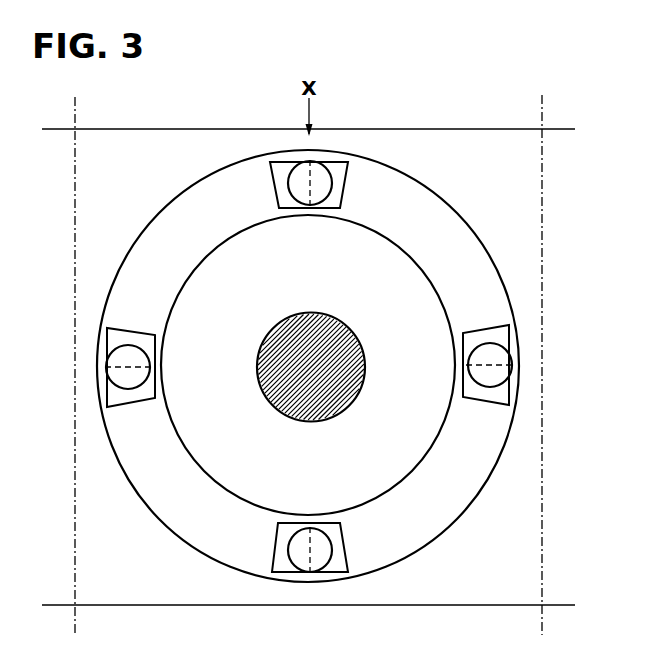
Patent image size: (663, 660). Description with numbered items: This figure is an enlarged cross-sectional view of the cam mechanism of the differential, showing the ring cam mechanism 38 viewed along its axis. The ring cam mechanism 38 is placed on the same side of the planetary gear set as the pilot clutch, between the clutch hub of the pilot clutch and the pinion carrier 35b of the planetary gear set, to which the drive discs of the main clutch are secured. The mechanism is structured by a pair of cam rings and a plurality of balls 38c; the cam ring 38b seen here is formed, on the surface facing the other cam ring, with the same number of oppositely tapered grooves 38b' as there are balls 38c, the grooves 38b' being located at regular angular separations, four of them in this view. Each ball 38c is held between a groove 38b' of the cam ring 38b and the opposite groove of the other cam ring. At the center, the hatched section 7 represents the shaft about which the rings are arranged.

The shaft 7 is at (352, 330).
The pinion carrier 35b is at (520, 527).
The ring cam mechanism 38 is at (533, 212).
The cam ring 38b is at (384, 365).
The oppositely tapered grooves 38b' is at (360, 367).
The balls 38c is at (500, 360).